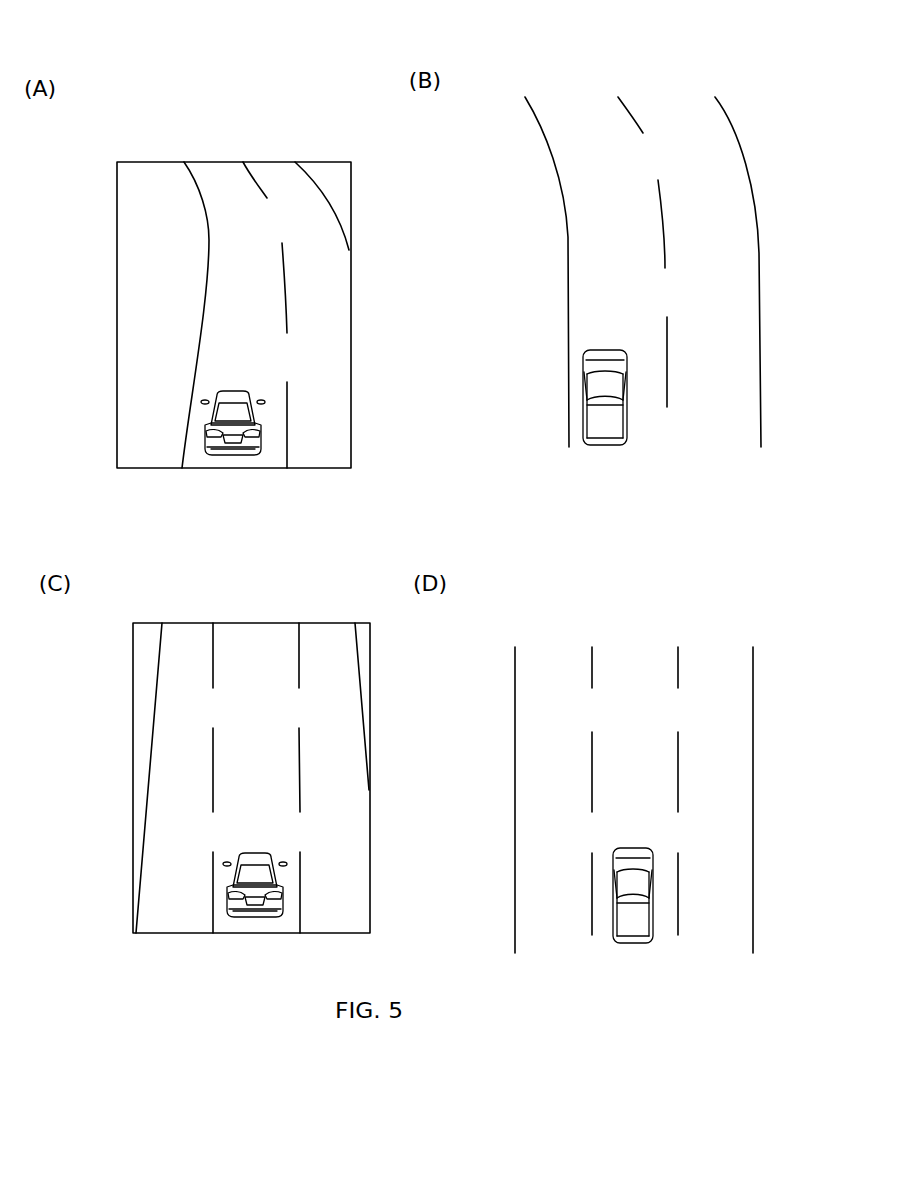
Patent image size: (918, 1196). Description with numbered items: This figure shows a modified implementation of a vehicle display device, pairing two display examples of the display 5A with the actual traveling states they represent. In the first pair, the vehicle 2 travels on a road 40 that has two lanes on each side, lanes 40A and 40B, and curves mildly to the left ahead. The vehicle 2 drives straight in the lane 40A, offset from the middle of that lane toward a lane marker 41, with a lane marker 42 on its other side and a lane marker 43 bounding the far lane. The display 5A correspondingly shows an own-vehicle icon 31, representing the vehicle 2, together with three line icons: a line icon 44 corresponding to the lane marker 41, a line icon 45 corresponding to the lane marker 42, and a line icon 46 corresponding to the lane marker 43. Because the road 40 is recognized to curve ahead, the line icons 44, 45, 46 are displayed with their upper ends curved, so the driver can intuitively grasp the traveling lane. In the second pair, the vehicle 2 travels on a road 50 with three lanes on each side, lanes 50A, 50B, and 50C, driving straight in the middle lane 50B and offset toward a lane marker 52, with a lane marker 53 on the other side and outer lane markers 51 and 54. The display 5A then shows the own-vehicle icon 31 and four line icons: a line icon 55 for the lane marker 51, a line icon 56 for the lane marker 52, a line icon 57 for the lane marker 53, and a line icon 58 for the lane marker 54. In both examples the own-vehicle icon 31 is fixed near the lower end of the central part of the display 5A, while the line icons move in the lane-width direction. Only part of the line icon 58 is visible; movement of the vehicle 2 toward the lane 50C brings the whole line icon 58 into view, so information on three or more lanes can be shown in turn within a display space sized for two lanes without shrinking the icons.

The vehicle 2 is at (585, 398).
The display 5A is at (121, 162).
The own-vehicle icon 31 is at (203, 418).
The road 40 is at (602, 67).
The lane 40A is at (580, 145).
The lane 40B is at (685, 140).
The lane marker 41 is at (566, 190).
The lane marker 42 is at (667, 194).
The lane marker 43 is at (748, 155).
The line icon 44 is at (209, 238).
The line icon 45 is at (287, 298).
The line icon 46 is at (332, 202).
The road 50 is at (603, 618).
The lane 50A is at (547, 652).
The lane 50B is at (638, 652).
The lane 50C is at (708, 652).
The lane marker 51 is at (515, 675).
The lane marker 52 is at (592, 675).
The lane marker 53 is at (678, 675).
The lane marker 54 is at (753, 675).
The line icon 55 is at (158, 673).
The line icon 56 is at (217, 658).
The line icon 57 is at (303, 658).
The line icon 58 is at (362, 677).